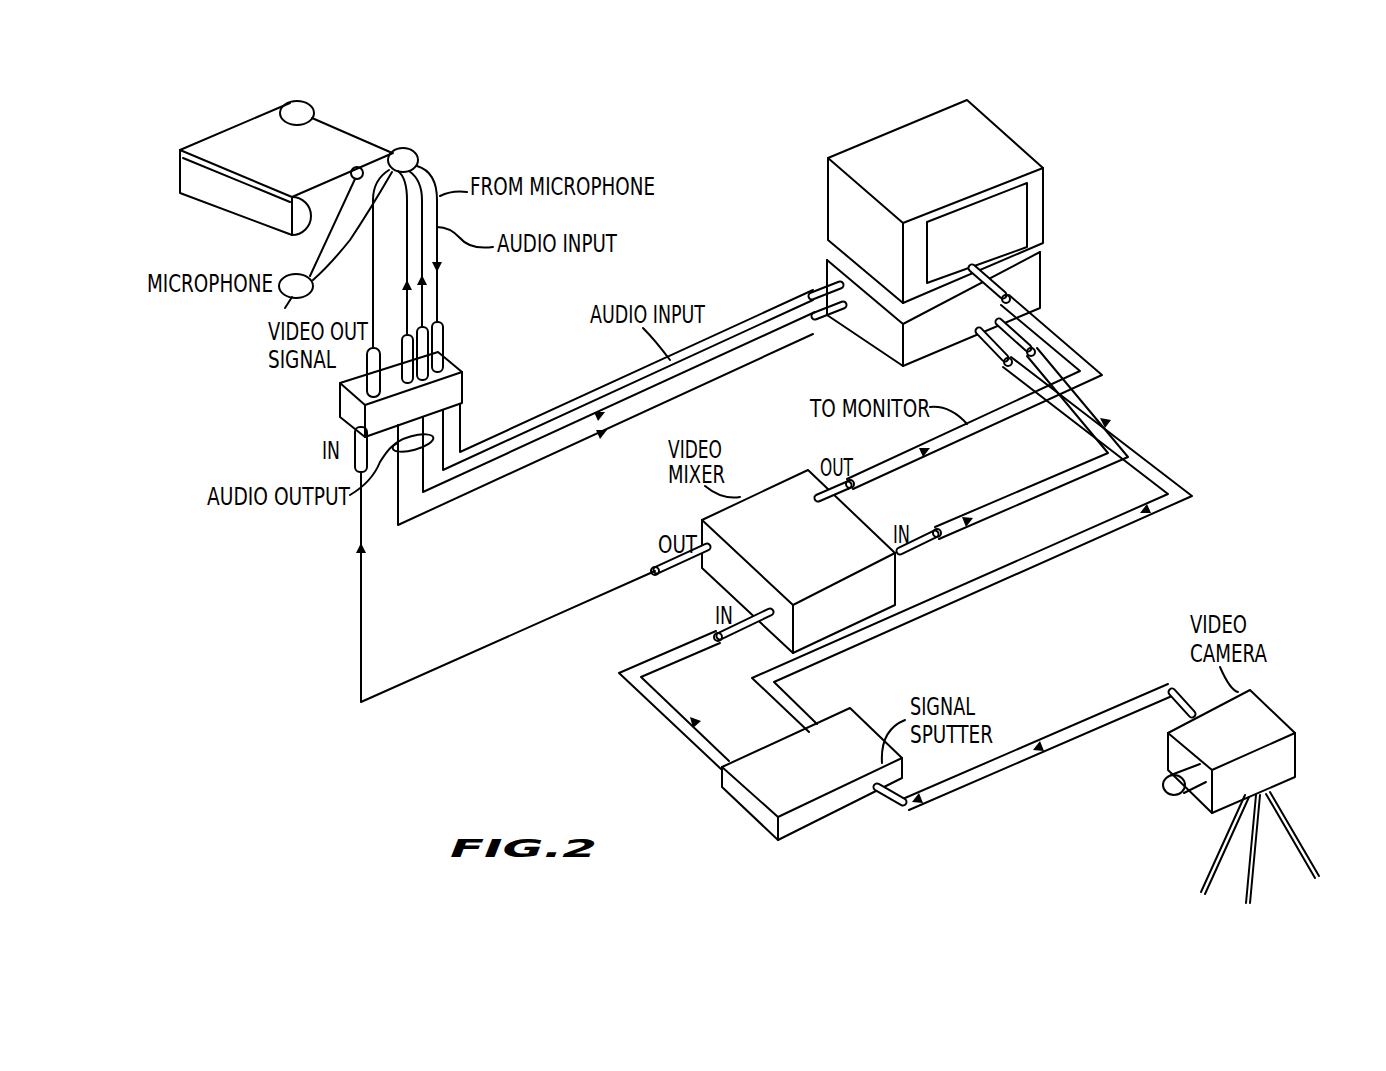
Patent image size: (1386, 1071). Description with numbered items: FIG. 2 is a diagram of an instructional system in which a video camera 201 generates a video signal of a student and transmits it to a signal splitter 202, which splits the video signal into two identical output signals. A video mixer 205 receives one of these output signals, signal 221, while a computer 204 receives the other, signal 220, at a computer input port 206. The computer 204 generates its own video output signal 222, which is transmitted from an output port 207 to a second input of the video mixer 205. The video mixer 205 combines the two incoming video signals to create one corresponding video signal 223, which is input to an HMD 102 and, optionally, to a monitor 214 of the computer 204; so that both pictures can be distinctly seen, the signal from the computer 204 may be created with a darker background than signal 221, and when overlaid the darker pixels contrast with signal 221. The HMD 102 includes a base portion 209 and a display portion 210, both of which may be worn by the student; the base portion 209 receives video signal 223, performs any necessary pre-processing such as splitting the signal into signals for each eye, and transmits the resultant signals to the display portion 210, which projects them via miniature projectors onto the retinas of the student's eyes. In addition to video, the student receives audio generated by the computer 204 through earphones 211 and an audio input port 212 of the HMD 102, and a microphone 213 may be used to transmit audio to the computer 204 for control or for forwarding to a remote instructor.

The HMD 102 is at (265, 445).
The video camera 201 is at (1293, 727).
The signal splitter 202 is at (768, 822).
The computer 204 is at (808, 293).
The video mixer 205 is at (800, 476).
The computer input port 206 is at (1040, 327).
The output port 207 is at (975, 332).
The base portion 209 is at (462, 368).
The display portion 210 is at (198, 148).
The earphones 211 is at (388, 156).
The audio input port 212 is at (395, 487).
The microphone 213 is at (283, 302).
The monitor 214 is at (883, 132).
The signal 220 is at (1080, 587).
The signal 221 is at (683, 647).
The video output signal 222 is at (997, 503).
The video signal 223 is at (500, 645).